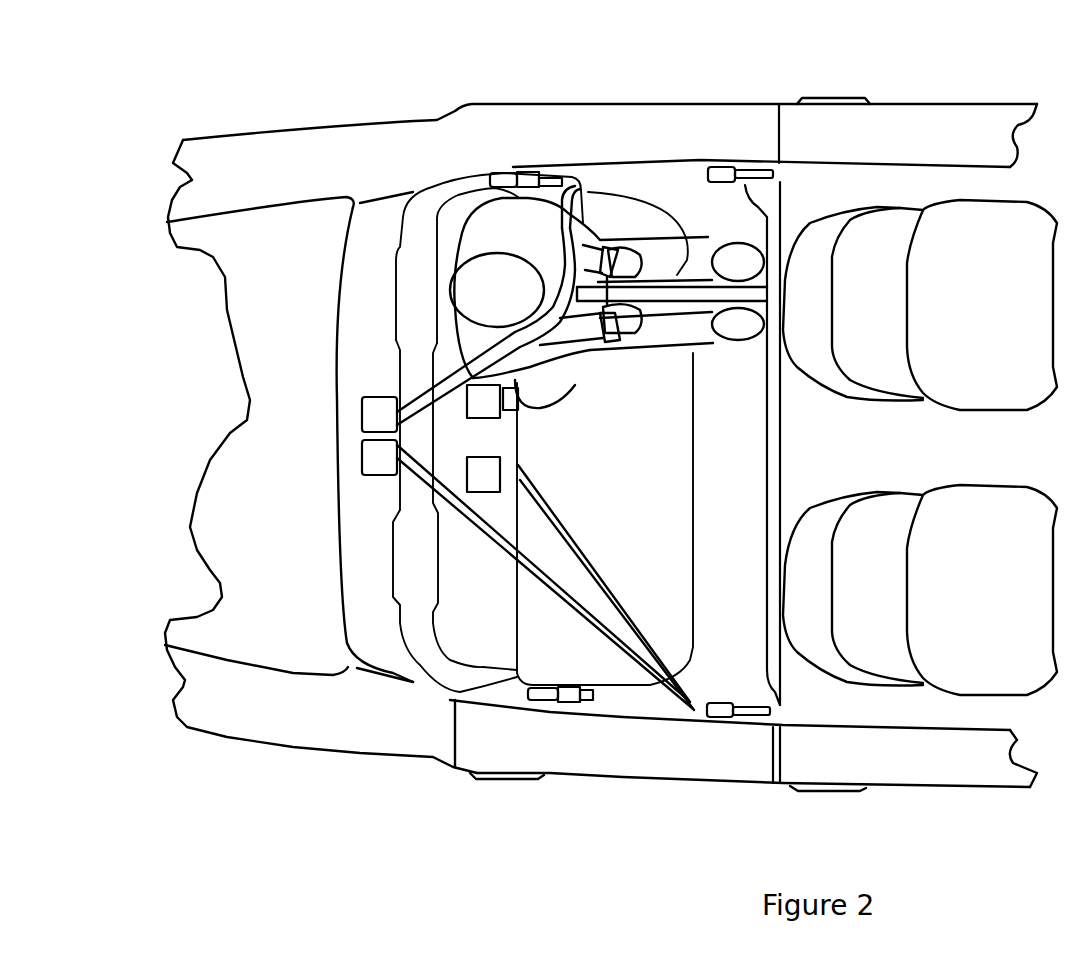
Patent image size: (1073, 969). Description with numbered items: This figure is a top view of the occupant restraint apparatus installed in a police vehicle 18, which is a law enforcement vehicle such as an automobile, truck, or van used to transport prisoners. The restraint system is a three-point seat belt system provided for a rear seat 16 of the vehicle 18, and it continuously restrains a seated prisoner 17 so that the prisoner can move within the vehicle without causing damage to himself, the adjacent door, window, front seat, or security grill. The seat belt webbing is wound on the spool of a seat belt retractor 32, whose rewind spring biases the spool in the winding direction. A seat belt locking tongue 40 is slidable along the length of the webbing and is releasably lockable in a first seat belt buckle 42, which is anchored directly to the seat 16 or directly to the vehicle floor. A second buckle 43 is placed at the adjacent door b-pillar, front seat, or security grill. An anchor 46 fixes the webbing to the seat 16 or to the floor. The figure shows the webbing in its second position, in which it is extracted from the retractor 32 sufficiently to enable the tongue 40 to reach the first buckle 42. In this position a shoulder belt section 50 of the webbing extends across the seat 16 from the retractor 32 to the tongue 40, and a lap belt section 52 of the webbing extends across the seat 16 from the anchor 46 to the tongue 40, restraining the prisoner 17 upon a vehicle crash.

The rear seat 16 is at (625, 690).
The seated prisoner 17 is at (473, 212).
The vehicle 18 is at (970, 140).
The seat belt retractor 32 is at (479, 438).
The seat belt locking tongue 40 is at (567, 180).
The first seat belt buckle 42 is at (540, 172).
The second buckle 43 is at (777, 160).
The anchor 46 is at (360, 423).
The shoulder belt section 50 is at (418, 390).
The lap belt section 52 is at (553, 407).